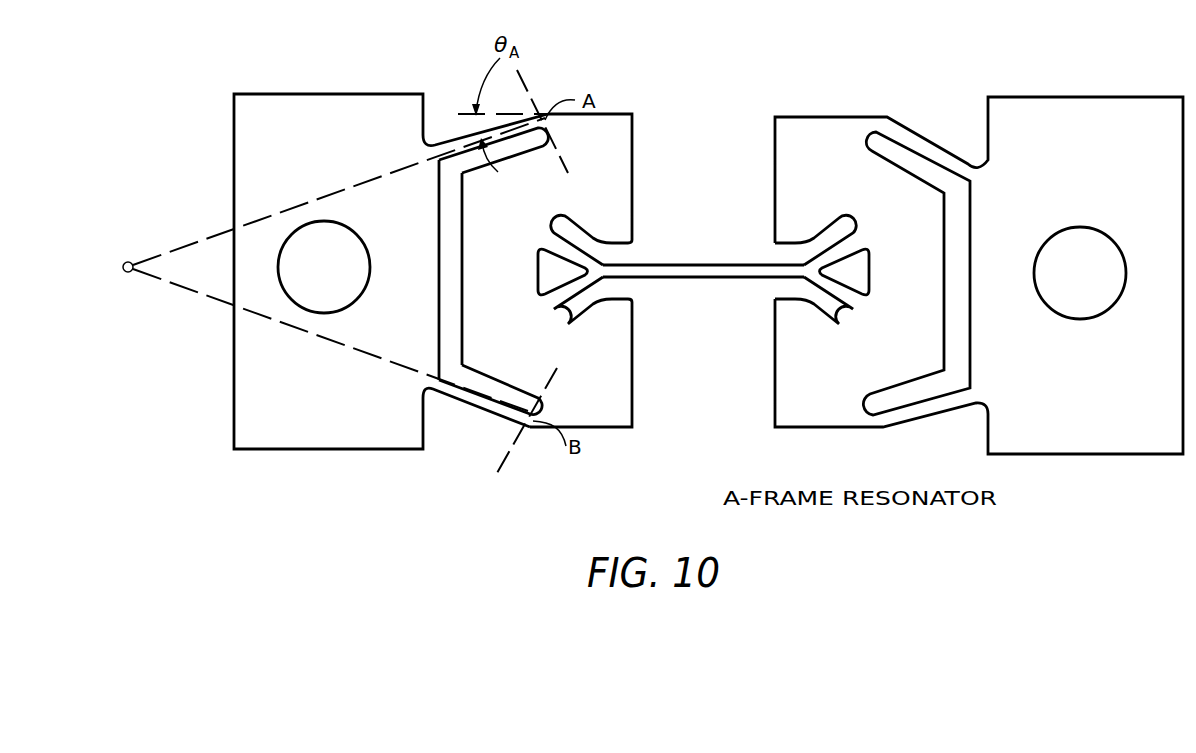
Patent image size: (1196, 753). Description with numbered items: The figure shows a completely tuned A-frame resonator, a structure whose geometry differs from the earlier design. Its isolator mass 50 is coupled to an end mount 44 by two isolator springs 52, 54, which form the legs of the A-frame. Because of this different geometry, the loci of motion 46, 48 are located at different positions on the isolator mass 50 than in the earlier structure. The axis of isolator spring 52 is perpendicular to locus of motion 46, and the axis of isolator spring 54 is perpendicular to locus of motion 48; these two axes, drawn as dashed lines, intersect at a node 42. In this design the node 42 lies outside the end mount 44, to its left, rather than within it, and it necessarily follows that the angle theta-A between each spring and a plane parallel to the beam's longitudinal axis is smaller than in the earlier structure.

The node 42 is at (128, 262).
The end mount 44 is at (302, 94).
The locus of motion 46 is at (533, 82).
The locus of motion 48 is at (520, 432).
The isolator mass 50 is at (628, 115).
The isolator spring 52 is at (449, 140).
The isolator spring 54 is at (468, 407).